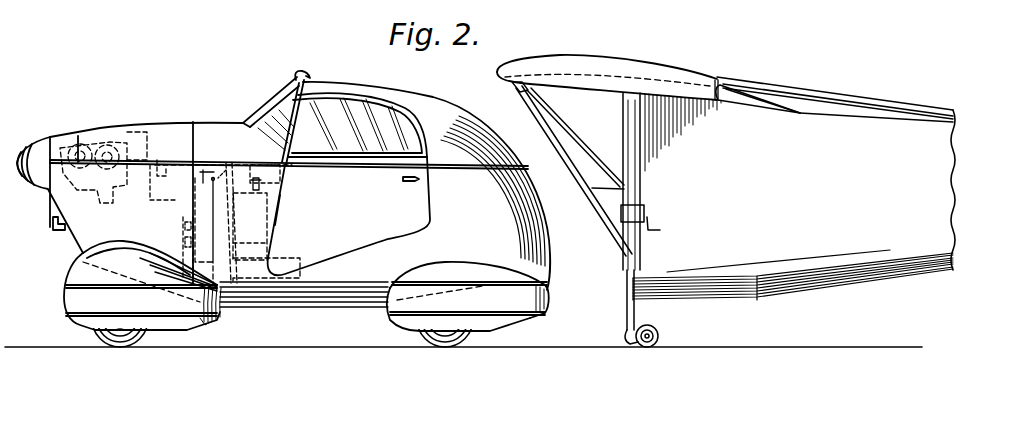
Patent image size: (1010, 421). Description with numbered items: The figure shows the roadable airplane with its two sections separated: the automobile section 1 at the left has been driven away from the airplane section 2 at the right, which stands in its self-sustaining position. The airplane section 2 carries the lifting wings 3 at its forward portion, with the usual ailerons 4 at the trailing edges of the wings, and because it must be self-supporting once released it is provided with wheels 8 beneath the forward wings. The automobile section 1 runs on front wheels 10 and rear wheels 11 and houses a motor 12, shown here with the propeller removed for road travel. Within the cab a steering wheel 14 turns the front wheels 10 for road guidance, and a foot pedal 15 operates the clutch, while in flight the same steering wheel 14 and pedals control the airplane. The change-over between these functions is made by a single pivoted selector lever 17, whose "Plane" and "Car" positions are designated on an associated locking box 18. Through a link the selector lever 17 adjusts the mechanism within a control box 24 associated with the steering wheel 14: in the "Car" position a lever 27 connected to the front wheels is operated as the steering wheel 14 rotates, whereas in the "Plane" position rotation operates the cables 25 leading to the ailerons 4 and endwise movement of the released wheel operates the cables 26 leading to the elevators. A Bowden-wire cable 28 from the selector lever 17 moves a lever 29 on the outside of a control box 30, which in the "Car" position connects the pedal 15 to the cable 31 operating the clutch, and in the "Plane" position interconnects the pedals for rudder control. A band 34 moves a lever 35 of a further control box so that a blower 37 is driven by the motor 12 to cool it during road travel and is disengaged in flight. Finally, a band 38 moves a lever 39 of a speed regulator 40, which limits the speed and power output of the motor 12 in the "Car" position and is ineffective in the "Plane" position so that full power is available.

The automobile section 1 is at (167, 121).
The airplane section 2 is at (859, 86).
The lifting wings 3 is at (600, 57).
The ailerons 4 is at (752, 96).
The wheels 8 is at (660, 330).
The front wheels 10 is at (93, 335).
The rear wheels 11 is at (410, 331).
The motor 12 is at (91, 147).
The steering wheel 14 is at (282, 183).
The foot pedal 15 is at (185, 279).
The selector lever 17 is at (262, 106).
The locking box 18 is at (248, 121).
The control box 24 is at (250, 226).
The cables 25 is at (238, 228).
The cables 26 is at (195, 196).
The lever 27 is at (280, 207).
The cable 28 is at (235, 248).
The lever 29 is at (220, 316).
The control box 30 is at (209, 323).
The cable 31 is at (279, 306).
The band 34 is at (196, 177).
The lever 35 is at (183, 237).
The blower 37 is at (182, 224).
The band 38 is at (201, 161).
The lever 39 is at (161, 162).
The speed regulator 40 is at (150, 184).